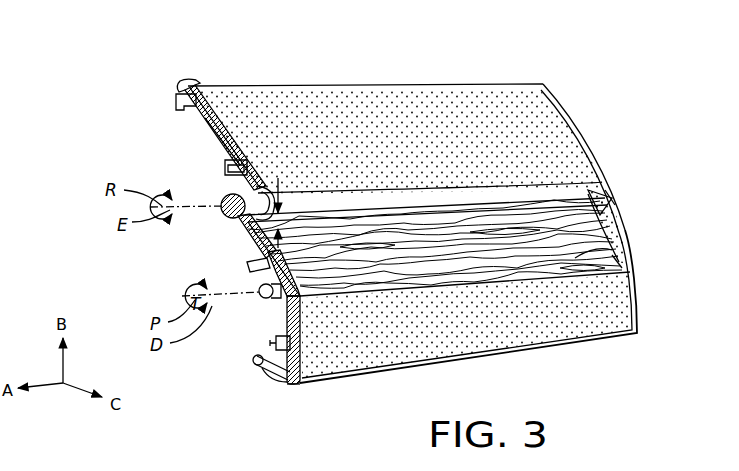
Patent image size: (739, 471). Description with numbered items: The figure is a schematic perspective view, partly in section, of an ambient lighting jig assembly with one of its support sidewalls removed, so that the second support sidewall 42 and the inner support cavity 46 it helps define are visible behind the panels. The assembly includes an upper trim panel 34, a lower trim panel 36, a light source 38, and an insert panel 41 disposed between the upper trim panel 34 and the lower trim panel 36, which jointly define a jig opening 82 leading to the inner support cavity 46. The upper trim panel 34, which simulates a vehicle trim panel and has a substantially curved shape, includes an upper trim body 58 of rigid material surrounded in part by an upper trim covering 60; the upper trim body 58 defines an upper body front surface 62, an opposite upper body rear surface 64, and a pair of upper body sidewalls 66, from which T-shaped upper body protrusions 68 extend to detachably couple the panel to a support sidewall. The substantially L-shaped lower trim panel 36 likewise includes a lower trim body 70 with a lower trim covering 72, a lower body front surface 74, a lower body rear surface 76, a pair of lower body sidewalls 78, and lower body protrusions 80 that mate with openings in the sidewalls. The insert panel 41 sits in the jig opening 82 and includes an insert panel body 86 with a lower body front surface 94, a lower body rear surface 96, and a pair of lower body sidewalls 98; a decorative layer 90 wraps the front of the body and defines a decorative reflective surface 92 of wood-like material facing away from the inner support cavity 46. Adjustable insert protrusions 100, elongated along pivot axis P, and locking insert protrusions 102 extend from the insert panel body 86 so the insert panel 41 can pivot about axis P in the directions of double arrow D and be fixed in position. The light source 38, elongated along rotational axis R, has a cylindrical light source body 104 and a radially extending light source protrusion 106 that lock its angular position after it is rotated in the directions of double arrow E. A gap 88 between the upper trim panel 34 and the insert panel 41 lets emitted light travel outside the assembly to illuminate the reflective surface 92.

The upper trim panel 34 is at (542, 125).
The lower trim panel 36 is at (570, 335).
The light source 38 is at (222, 200).
The insert panel 41 is at (593, 235).
The second support sidewall 42 is at (610, 188).
The inner support cavity 46 is at (116, 295).
The upper trim body 58 is at (212, 112).
The upper trim covering 60 is at (437, 102).
The upper body front surface 62 is at (192, 82).
The upper body rear surface 64 is at (215, 143).
The upper body sidewalls 66 is at (228, 140).
The upper body protrusions 68 is at (178, 100).
The lower trim body 70 is at (275, 384).
The lower trim covering 72 is at (475, 338).
The lower body front surface 74 is at (305, 372).
The lower body rear surface 76 is at (276, 342).
The lower body sidewalls 78 is at (291, 388).
The lower body protrusions 80 is at (262, 370).
The jig opening 82 is at (598, 200).
The insert panel body 86 is at (262, 252).
The gap 88 is at (281, 177).
The decorative layer 90 is at (570, 257).
The decorative reflective surface 92 is at (618, 262).
The lower body front surface 94 is at (240, 263).
The lower body rear surface 96 is at (240, 228).
The lower body sidewalls 98 is at (305, 294).
The adjustable insert protrusions 100 is at (262, 300).
The locking insert protrusions 102 is at (258, 291).
The light source body 104 is at (275, 187).
The light source protrusion 106 is at (228, 168).